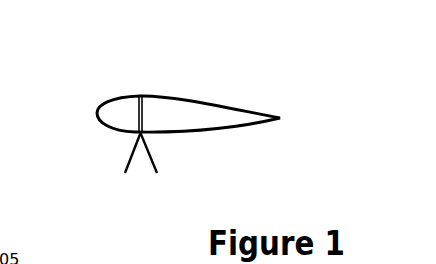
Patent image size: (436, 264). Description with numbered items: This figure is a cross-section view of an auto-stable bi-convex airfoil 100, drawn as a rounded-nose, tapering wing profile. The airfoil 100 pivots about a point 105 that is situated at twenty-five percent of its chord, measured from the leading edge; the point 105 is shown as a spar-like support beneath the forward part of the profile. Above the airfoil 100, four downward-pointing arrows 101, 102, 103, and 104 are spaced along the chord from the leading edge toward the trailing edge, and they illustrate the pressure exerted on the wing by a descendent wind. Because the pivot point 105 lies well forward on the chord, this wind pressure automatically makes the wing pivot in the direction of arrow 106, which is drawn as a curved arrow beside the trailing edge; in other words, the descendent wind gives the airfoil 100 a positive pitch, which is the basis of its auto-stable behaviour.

The auto-stable bi-convex airfoil 100 is at (108, 116).
The arrow 101 is at (110, 78).
The arrow 102 is at (172, 78).
The arrow 103 is at (222, 78).
The arrow 104 is at (273, 78).
The pivot point 105 is at (150, 152).
The arrow 106 is at (322, 97).